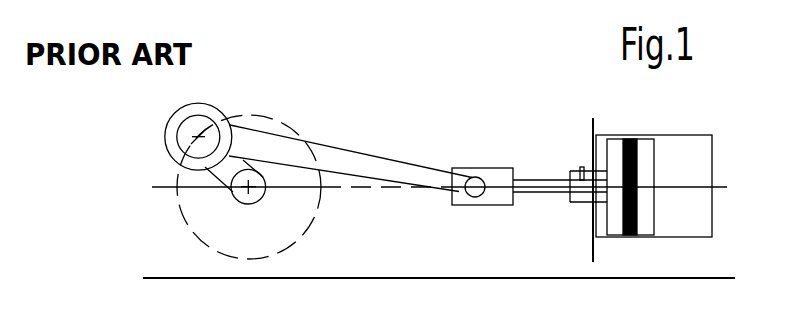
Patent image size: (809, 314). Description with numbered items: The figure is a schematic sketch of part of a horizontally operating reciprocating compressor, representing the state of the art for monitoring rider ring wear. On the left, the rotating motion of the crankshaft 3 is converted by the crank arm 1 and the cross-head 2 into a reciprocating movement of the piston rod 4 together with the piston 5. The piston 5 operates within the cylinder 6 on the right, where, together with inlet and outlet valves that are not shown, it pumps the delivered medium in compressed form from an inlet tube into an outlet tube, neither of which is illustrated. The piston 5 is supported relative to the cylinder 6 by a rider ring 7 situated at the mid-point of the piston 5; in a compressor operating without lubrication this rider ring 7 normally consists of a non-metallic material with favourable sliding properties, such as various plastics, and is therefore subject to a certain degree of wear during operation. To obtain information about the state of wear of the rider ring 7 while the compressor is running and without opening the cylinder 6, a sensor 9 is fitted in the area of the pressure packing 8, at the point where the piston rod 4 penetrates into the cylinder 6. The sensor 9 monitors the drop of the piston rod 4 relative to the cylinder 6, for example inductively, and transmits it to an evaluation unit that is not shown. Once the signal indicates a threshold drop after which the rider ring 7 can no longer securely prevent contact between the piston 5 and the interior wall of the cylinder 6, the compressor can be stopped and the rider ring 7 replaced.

The crank arm 1 is at (325, 127).
The cross-head 2 is at (495, 192).
The crankshaft 3 is at (260, 210).
The piston rod 4 is at (552, 190).
The piston 5 is at (648, 223).
The cylinder 6 is at (713, 172).
The rider ring 7 is at (623, 238).
The pressure packing 8 is at (587, 197).
The sensor 9 is at (575, 162).